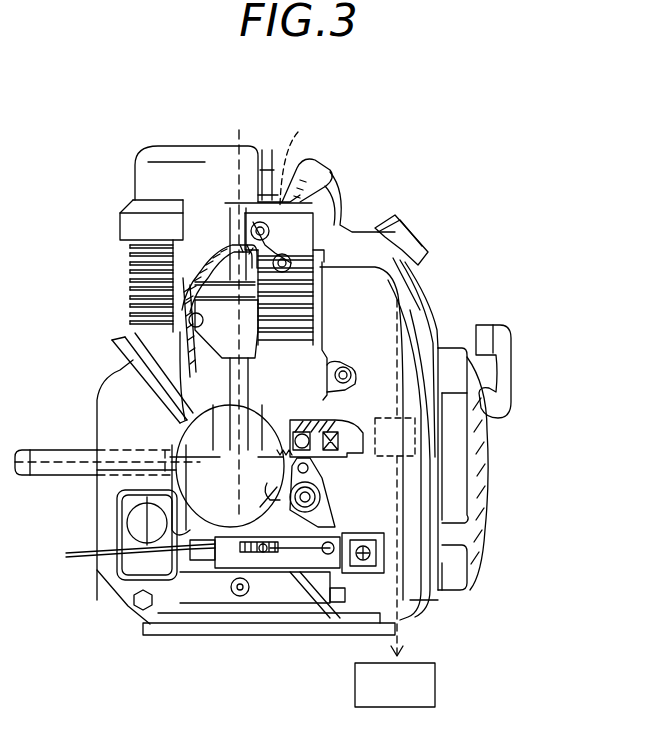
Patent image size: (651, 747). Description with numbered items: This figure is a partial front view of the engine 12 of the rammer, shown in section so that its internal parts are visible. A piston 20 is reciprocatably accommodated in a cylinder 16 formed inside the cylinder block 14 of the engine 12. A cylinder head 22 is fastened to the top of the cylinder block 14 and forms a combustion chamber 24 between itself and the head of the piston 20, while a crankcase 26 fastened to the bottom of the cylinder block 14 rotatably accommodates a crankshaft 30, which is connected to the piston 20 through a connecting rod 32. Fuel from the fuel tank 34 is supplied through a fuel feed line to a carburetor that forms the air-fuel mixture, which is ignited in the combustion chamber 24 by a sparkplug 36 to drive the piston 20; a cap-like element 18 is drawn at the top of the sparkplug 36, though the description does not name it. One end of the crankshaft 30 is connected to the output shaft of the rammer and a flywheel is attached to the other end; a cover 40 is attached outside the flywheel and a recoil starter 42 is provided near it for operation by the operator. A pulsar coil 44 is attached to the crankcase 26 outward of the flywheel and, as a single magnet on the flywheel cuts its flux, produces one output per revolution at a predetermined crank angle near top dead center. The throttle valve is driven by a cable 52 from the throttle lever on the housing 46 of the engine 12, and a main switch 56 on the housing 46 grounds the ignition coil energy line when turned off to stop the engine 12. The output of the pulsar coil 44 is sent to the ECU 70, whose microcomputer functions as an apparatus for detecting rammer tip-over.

The engine 12 is at (122, 150).
The cylinder block 14 is at (130, 260).
The cylinder 16 is at (180, 303).
The spark plug cap 18 is at (318, 165).
The piston 20 is at (155, 338).
The cylinder head 22 is at (265, 200).
The combustion chamber 24 is at (196, 280).
The crankcase 26 is at (97, 490).
The crankshaft 30 is at (173, 443).
The connecting rod 32 is at (213, 389).
The fuel tank 34 is at (181, 144).
The sparkplug 36 is at (302, 161).
The cover 40 is at (485, 493).
The recoil starter 42 is at (502, 416).
The pulsar coil 44 is at (395, 478).
The housing 46 is at (395, 513).
The cable 52 is at (284, 553).
The main switch 56 is at (402, 228).
The ECU 70 is at (420, 663).